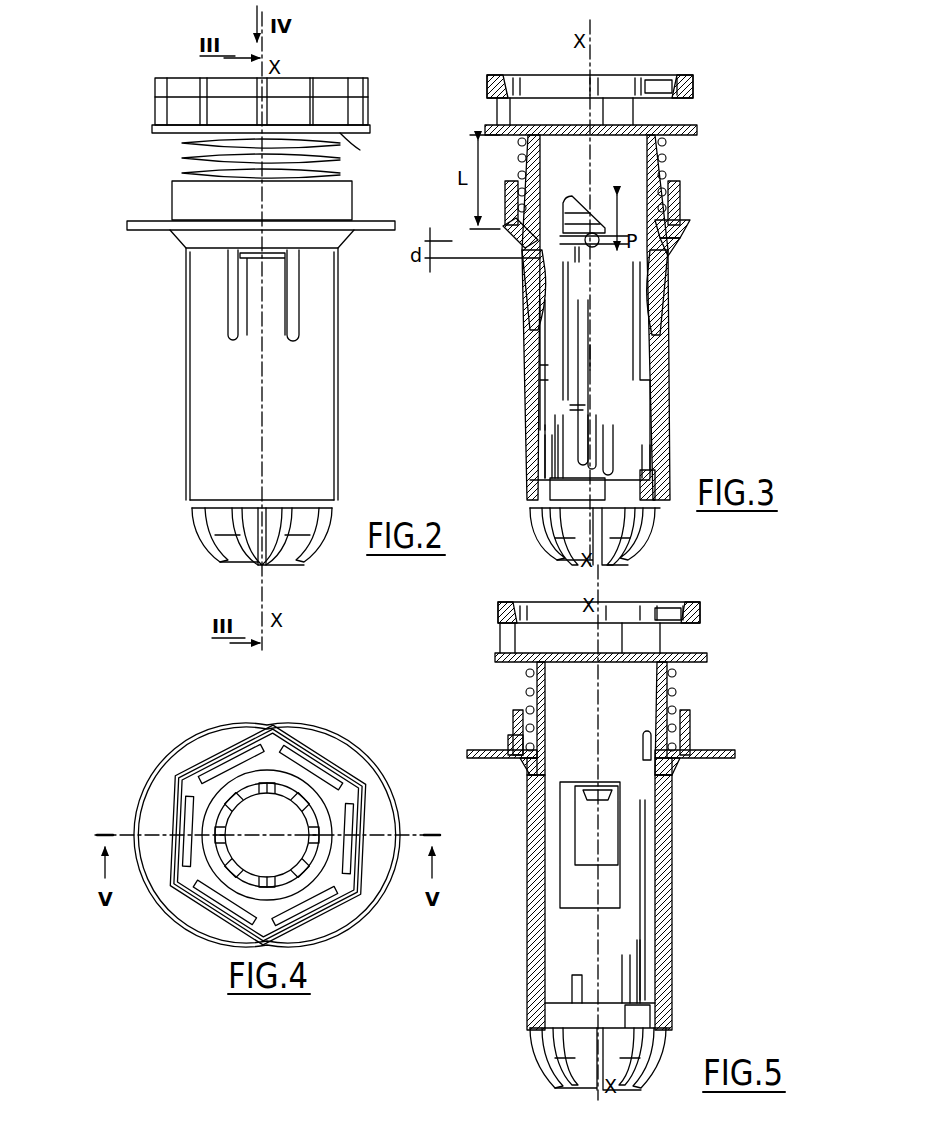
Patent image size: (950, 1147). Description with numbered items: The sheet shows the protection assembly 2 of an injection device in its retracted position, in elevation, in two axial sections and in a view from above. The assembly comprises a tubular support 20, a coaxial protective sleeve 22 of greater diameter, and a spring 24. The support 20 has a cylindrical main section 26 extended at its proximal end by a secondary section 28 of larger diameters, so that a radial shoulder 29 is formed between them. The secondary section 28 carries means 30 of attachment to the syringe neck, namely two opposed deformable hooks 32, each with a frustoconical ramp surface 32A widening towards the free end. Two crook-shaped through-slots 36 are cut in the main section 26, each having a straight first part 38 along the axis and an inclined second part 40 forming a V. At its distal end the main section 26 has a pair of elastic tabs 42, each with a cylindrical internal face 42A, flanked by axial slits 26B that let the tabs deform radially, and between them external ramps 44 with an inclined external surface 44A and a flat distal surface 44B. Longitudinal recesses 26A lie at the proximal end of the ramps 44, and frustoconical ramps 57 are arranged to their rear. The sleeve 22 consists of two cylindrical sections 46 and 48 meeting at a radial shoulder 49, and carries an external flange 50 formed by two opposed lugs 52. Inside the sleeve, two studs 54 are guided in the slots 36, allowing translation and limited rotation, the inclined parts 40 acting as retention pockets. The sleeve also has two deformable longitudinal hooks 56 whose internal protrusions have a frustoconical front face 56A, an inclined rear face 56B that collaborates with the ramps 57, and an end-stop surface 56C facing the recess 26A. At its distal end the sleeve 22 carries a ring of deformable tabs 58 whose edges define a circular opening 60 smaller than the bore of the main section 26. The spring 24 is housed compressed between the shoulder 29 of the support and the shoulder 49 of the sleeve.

In FIG. 2, the protection assembly 2 is at (182, 413).
In FIG. 3, the protection assembly 2 is at (726, 340).
In FIG. 4, the protection assembly 2 is at (170, 942).
In FIG. 5, the protection assembly 2 is at (741, 872).
In FIG. 2, the support 20 is at (378, 106).
In FIG. 3, the support 20 is at (735, 108).
In FIG. 4, the support 20 is at (337, 722).
In FIG. 5, the support 20 is at (735, 640).
In FIG. 2, the protective sleeve 22 is at (343, 374).
In FIG. 3, the protective sleeve 22 is at (678, 422).
In FIG. 5, the protective sleeve 22 is at (680, 840).
In FIG. 2, the spring 24 is at (182, 160).
In FIG. 3, the spring 24 is at (667, 174).
In FIG. 5, the spring 24 is at (680, 699).
In FIG. 3, the main section 26 is at (528, 166).
In FIG. 5, the main section 26 is at (545, 893).
In FIG. 3, the longitudinal recesses 26A is at (540, 369).
In FIG. 5, the longitudinal recesses 26A is at (560, 834).
In FIG. 3, the axial slits 26B is at (540, 456).
In FIG. 5, the axial slits 26B is at (626, 990).
In FIG. 3, the secondary section 28 is at (500, 108).
In FIG. 5, the secondary section 28 is at (505, 641).
In FIG. 2, the radial shoulder 29 is at (360, 150).
In FIG. 3, the radial shoulder 29 is at (673, 136).
In FIG. 5, the radial shoulder 29 is at (685, 664).
In FIG. 3, the means of attachment 30 is at (656, 74).
In FIG. 5, the means of attachment 30 is at (669, 600).
In FIG. 3, the deformable hooks 32 is at (545, 78).
In FIG. 4, the deformable hooks 32 is at (240, 747).
In FIG. 5, the deformable hooks 32 is at (700, 612).
In FIG. 3, the frustoconical ramp surface 32A is at (672, 82).
In FIG. 5, the frustoconical ramp surface 32A is at (683, 610).
In FIG. 3, the crook-shaped through-slots 36 is at (578, 396).
In FIG. 3, the straight first part 38 is at (585, 407).
In FIG. 3, the inclined second part 40 is at (580, 205).
In FIG. 3, the elastic tabs 42 is at (565, 492).
In FIG. 5, the elastic tabs 42 is at (660, 1021).
In FIG. 5, the internal face 42A is at (572, 1003).
In FIG. 3, the external ramps 44 is at (597, 446).
In FIG. 3, the inclined external surface 44A is at (665, 392).
In FIG. 3, the distal surface 44B is at (668, 482).
In FIG. 2, the main section of the sleeve 46 is at (182, 193).
In FIG. 3, the main section of the sleeve 46 is at (682, 203).
In FIG. 5, the main section of the sleeve 46 is at (691, 728).
In FIG. 2, the cylindrical section of the sleeve 48 is at (330, 418).
In FIG. 3, the cylindrical section of the sleeve 48 is at (671, 358).
In FIG. 5, the cylindrical section of the sleeve 48 is at (672, 799).
In FIG. 3, the radial shoulder of the sleeve 49 is at (690, 222).
In FIG. 5, the radial shoulder of the sleeve 49 is at (515, 745).
In FIG. 2, the external flange 50 is at (384, 221).
In FIG. 3, the external flange 50 is at (505, 235).
In FIG. 4, the external flange 50 is at (358, 768).
In FIG. 5, the external flange 50 is at (735, 755).
In FIG. 4, the lugs 52 is at (150, 816).
In FIG. 3, the studs 54 is at (584, 242).
In FIG. 5, the studs 54 is at (546, 770).
In FIG. 2, the deformable longitudinal hooks 56 is at (245, 290).
In FIG. 3, the deformable longitudinal hooks 56 is at (538, 298).
In FIG. 3, the front face 56A is at (645, 298).
In FIG. 3, the inclined rear face 56B is at (620, 262).
In FIG. 3, the inclined transverse surface 56C is at (662, 250).
In FIG. 3, the frustoconical ramps 57 is at (668, 246).
In FIG. 2, the deformable tabs 58 is at (218, 540).
In FIG. 3, the deformable tabs 58 is at (632, 542).
In FIG. 5, the deformable tabs 58 is at (620, 1080).
In FIG. 3, the circular opening 60 is at (547, 548).
In FIG. 4, the circular opening 60 is at (248, 817).
In FIG. 5, the circular opening 60 is at (548, 1082).